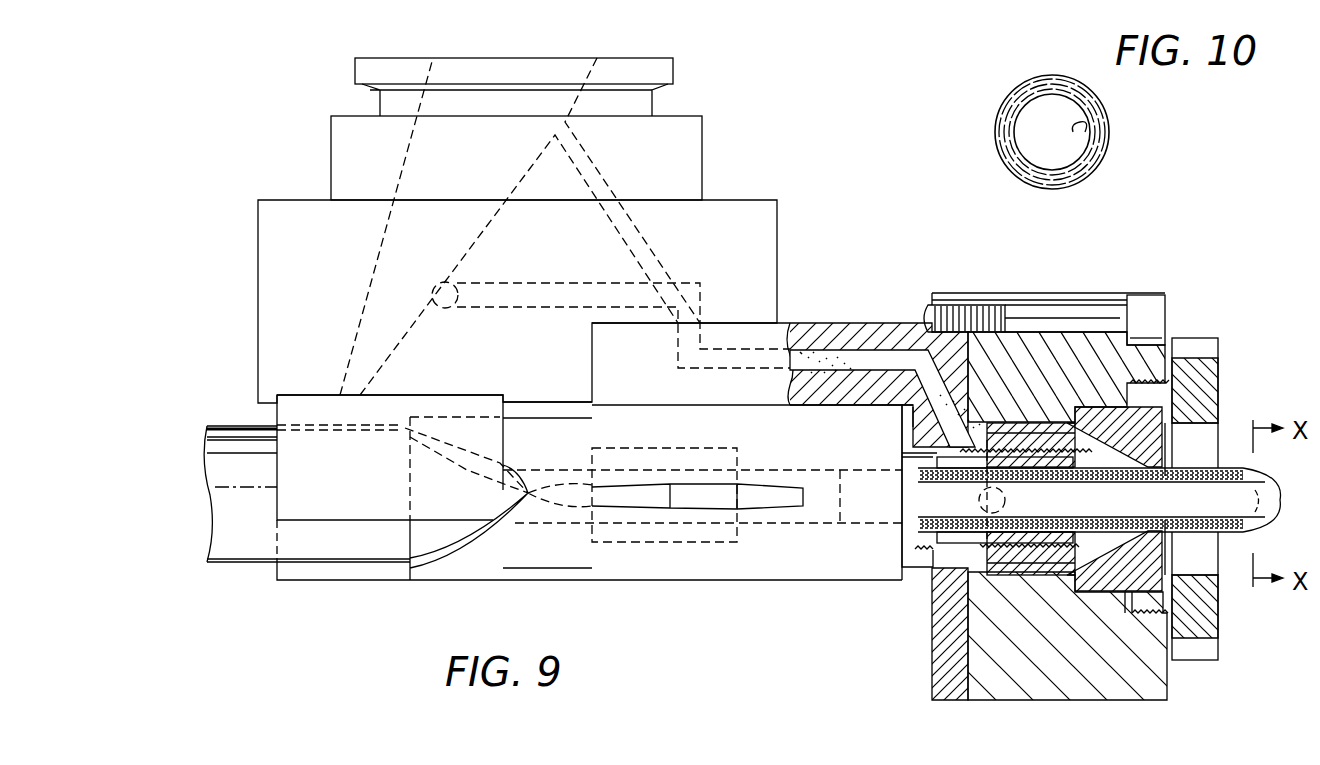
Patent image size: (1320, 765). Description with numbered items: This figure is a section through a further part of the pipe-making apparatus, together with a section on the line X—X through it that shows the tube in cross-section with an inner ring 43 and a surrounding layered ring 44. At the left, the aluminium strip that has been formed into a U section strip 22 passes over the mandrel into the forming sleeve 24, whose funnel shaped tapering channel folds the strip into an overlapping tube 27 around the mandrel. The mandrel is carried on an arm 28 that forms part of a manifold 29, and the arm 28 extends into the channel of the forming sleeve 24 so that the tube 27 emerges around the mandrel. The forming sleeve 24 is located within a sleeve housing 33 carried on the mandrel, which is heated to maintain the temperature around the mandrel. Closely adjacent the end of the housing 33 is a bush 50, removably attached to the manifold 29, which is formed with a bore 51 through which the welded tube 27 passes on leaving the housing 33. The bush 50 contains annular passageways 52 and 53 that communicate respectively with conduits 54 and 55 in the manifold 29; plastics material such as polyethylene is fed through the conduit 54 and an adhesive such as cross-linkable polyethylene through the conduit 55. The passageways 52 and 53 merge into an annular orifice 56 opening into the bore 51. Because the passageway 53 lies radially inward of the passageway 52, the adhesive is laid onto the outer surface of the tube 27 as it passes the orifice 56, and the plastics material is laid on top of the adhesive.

In FIG. 9, the U section strip 22 is at (243, 426).
In FIG. 9, the forming sleeve 24 is at (490, 552).
In FIG. 9, the overlapping tube 27 is at (570, 515).
In FIG. 9, the arm 28 is at (340, 497).
In FIG. 9, the manifold 29 is at (685, 163).
In FIG. 9, the sleeve housing 33 is at (803, 335).
In FIG. 10, the inner bore 43 is at (1073, 132).
In FIG. 10, the braided sheath 44 is at (1087, 173).
In FIG. 9, the bush 50 is at (1050, 703).
In FIG. 9, the bore 51 is at (927, 570).
In FIG. 9, the annular passageway 52 is at (1020, 425).
In FIG. 9, the annular passageway 53 is at (1060, 443).
In FIG. 9, the conduit 54 is at (975, 545).
In FIG. 9, the conduit 55 is at (860, 365).
In FIG. 9, the annular orifice 56 is at (1143, 447).